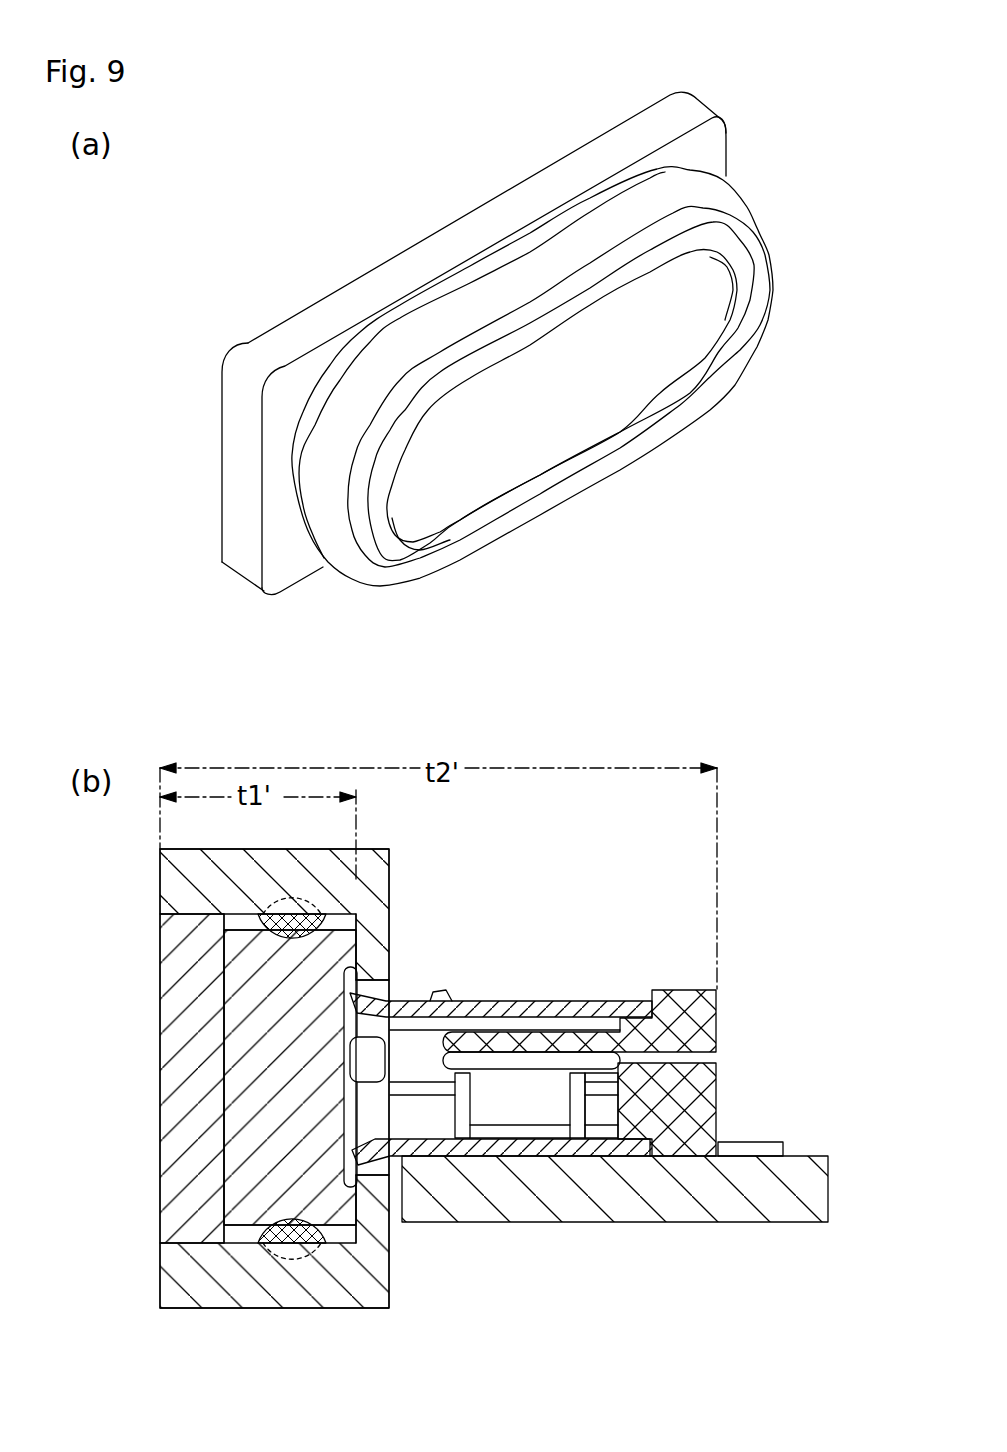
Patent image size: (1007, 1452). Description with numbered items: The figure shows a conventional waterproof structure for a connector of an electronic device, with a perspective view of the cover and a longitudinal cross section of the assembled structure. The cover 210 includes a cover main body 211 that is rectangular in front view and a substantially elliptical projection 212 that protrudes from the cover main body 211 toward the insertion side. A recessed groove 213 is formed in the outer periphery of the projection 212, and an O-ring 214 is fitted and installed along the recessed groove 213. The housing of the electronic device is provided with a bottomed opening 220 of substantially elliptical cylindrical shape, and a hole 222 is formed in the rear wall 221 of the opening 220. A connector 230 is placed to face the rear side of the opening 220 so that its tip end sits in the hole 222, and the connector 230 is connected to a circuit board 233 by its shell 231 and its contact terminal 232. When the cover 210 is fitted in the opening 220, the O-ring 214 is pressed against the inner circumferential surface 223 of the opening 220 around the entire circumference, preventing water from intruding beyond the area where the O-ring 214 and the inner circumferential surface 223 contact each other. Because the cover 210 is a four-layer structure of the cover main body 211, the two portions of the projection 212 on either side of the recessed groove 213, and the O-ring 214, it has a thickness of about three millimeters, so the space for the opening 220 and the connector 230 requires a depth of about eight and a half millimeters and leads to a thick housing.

The cover 210 is at (431, 220).
The cover main body 211 is at (310, 313).
The projection 212 is at (643, 272).
The recessed groove 213 is at (325, 945).
The O-ring 214 is at (484, 763).
The opening 220 is at (309, 1110).
The rear wall 221 is at (384, 1208).
The hole 222 is at (378, 988).
The inner circumferential surface 223 is at (345, 1272).
The connector 230 is at (589, 1094).
The shell 231 is at (606, 1001).
The contact terminal 232 is at (697, 1047).
The circuit board 233 is at (624, 1210).